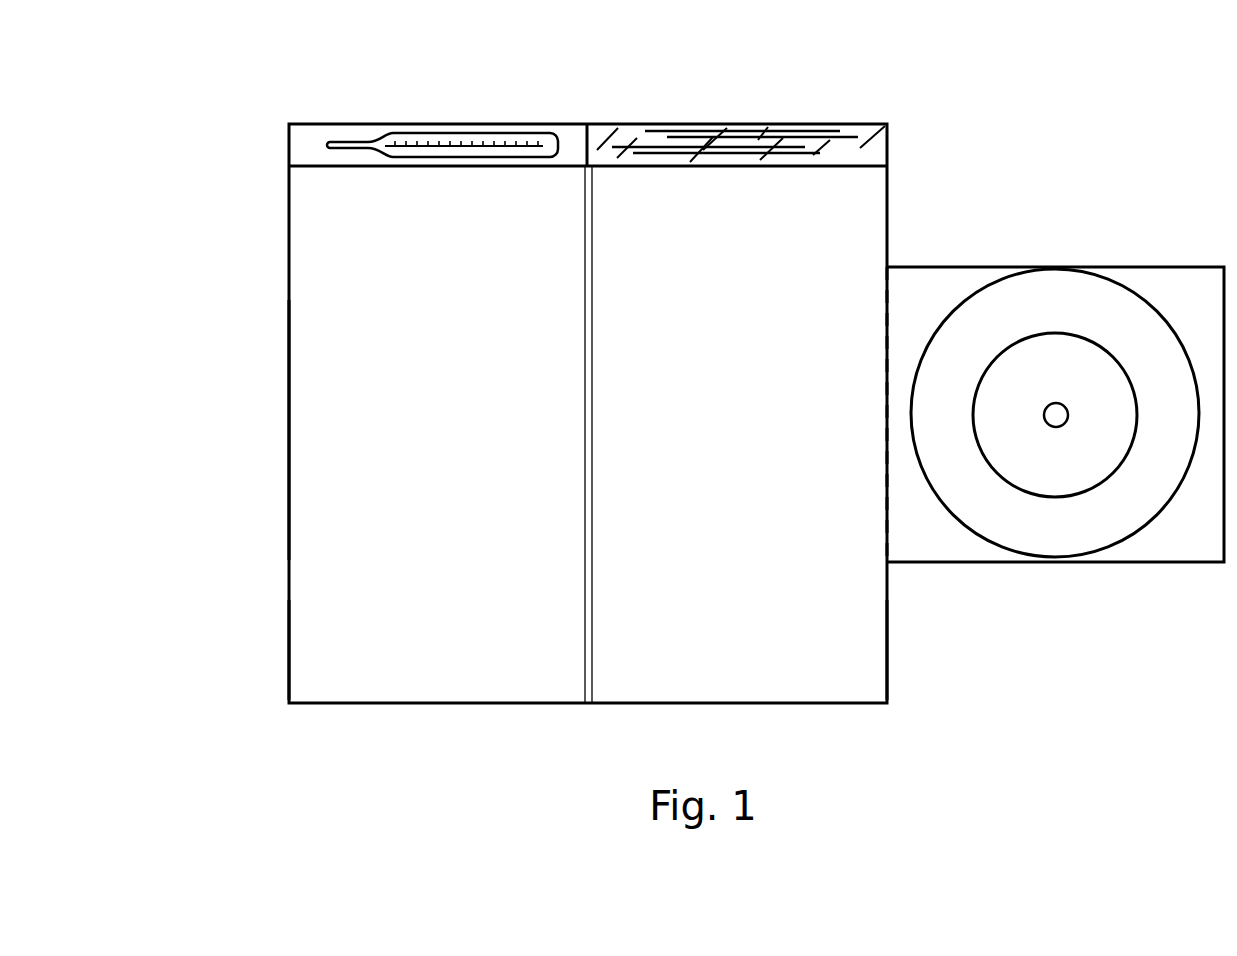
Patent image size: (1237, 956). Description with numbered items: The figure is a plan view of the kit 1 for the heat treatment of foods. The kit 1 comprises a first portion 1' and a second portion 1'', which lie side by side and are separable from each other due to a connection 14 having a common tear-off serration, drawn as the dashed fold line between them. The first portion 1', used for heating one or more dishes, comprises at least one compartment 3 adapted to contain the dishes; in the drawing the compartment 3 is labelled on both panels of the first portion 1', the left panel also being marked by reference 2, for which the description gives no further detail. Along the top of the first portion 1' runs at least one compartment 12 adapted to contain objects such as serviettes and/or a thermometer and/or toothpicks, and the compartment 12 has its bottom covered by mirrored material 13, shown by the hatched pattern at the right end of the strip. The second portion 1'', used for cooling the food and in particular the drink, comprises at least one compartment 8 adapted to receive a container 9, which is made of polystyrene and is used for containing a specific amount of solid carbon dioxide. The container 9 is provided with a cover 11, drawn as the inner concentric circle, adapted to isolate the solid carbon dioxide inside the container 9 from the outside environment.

The kit 1 is at (553, 388).
The first portion 1' is at (589, 741).
The second portion 1'' is at (1021, 601).
The left panel 2 is at (288, 403).
The compartment 3 is at (412, 490).
The compartment 8 is at (918, 517).
The container 9 is at (1117, 517).
The cover 11 is at (1053, 362).
The compartment 12 is at (312, 133).
The mirrored material 13 is at (847, 150).
The connection 14 is at (887, 480).